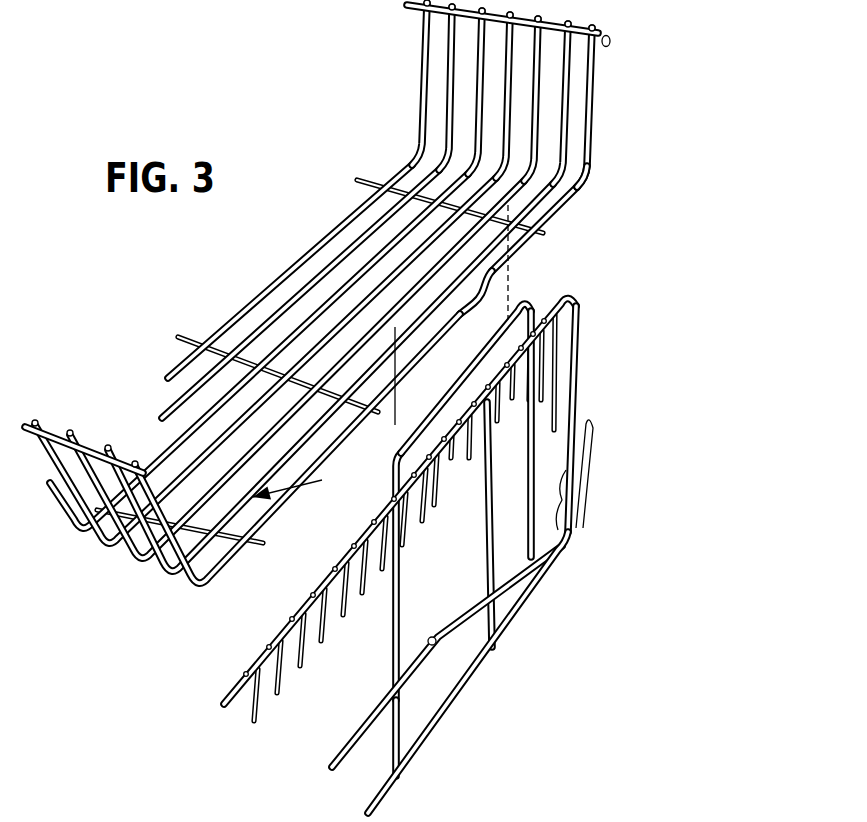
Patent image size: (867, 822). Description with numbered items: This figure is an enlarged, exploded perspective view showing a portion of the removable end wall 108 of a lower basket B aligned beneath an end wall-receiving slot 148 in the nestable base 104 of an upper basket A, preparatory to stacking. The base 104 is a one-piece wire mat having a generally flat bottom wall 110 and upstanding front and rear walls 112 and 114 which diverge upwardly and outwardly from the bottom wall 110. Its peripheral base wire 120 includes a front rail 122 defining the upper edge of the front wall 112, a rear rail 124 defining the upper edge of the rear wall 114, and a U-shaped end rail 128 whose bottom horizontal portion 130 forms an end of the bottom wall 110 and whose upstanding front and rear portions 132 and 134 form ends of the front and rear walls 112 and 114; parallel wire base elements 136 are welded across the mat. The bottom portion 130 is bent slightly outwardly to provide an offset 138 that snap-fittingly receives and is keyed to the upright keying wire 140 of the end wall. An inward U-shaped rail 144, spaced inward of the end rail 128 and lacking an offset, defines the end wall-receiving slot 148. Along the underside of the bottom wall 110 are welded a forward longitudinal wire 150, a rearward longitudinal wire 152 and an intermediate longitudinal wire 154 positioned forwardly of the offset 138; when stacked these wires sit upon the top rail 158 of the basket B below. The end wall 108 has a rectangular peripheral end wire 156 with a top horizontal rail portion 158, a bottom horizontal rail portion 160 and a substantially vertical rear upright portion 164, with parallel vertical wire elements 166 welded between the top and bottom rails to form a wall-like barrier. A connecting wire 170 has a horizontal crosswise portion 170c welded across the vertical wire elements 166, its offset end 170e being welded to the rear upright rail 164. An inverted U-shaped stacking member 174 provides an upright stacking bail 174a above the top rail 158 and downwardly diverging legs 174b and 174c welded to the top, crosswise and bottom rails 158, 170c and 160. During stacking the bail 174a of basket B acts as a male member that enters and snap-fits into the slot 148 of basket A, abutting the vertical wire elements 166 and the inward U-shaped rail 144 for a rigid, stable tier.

The basket A is at (362, 310).
The basket B is at (440, 511).
The nestable base 104 is at (362, 310).
The removable end wall 108 is at (440, 511).
The bottom wall 110 is at (307, 247).
The front wall 112 is at (96, 532).
The rear wall 114 is at (551, 95).
The peripheral base wire 120 is at (607, 46).
The front rail 122 is at (50, 430).
The rear rail 124 is at (437, 14).
The U-shaped end rail 128 is at (592, 170).
The bottom horizontal portion 130 is at (380, 401).
The upstanding front portion 132 is at (175, 553).
The upstanding rear portion 134 is at (590, 128).
The wire base elements 136 is at (279, 342).
The offset 138 is at (490, 290).
The upright keying wire 140 is at (487, 582).
The inward U-shaped rail 144 is at (204, 549).
The end wall-receiving slot 148 is at (309, 485).
The forward longitudinal wire 150 is at (265, 541).
The rearward longitudinal wire 152 is at (546, 233).
The intermediate longitudinal wire 154 is at (178, 336).
The peripheral end wire 156 is at (437, 534).
The top horizontal rail portion 158 is at (250, 660).
The bottom horizontal rail portion 160 is at (452, 707).
The rear upright portion 164 is at (569, 500).
The vertical wire elements 166 is at (258, 706).
The connecting wire 170 is at (557, 537).
The horizontal crosswise portion 170c is at (436, 640).
The offset end 170e is at (585, 462).
The inverted U-shaped stacking member 174 is at (464, 560).
The stacking bail 174a is at (449, 383).
The leg 174b is at (382, 758).
The leg 174c is at (537, 537).